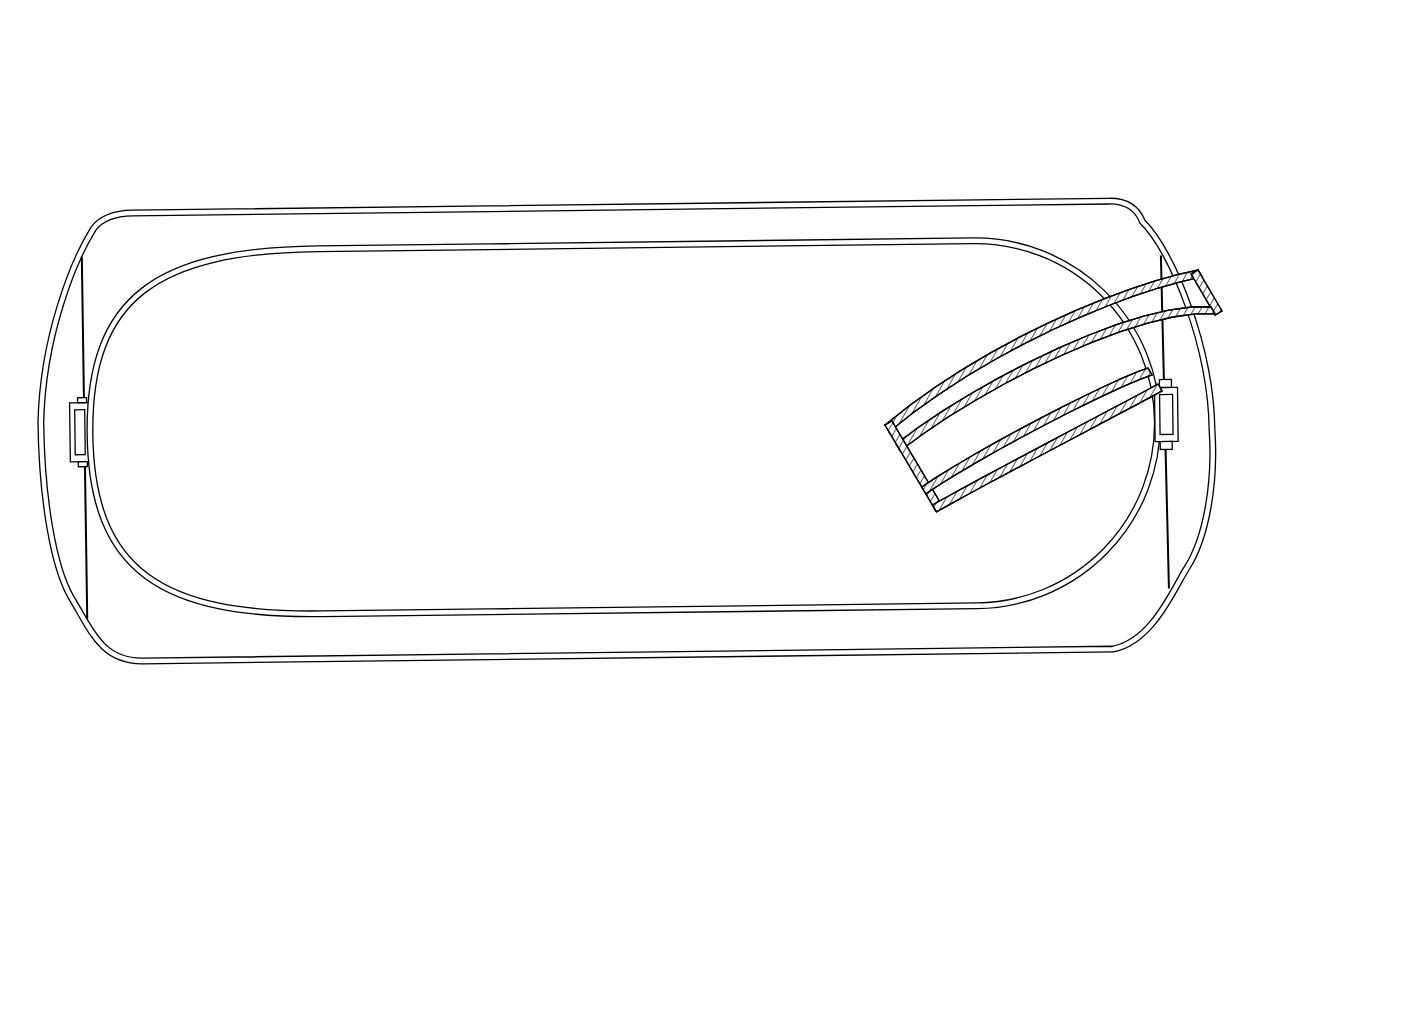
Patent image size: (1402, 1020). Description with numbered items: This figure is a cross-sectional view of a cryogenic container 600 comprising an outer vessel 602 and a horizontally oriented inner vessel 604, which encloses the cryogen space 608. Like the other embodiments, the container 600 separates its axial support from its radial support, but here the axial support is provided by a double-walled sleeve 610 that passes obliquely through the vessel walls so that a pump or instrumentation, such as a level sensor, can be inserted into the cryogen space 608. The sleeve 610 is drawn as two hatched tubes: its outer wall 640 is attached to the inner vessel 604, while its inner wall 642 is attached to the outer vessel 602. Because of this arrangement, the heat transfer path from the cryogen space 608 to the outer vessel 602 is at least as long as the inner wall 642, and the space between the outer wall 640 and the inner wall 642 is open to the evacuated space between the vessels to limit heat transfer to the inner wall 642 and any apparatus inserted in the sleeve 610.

The container 600 is at (275, 124).
The outer vessel 602 is at (738, 201).
The inner vessel 604 is at (668, 240).
The cryogen space 608 is at (553, 432).
The double-walled sleeve 610 is at (1228, 222).
The outer wall 640 is at (988, 352).
The inner wall 642 is at (965, 402).